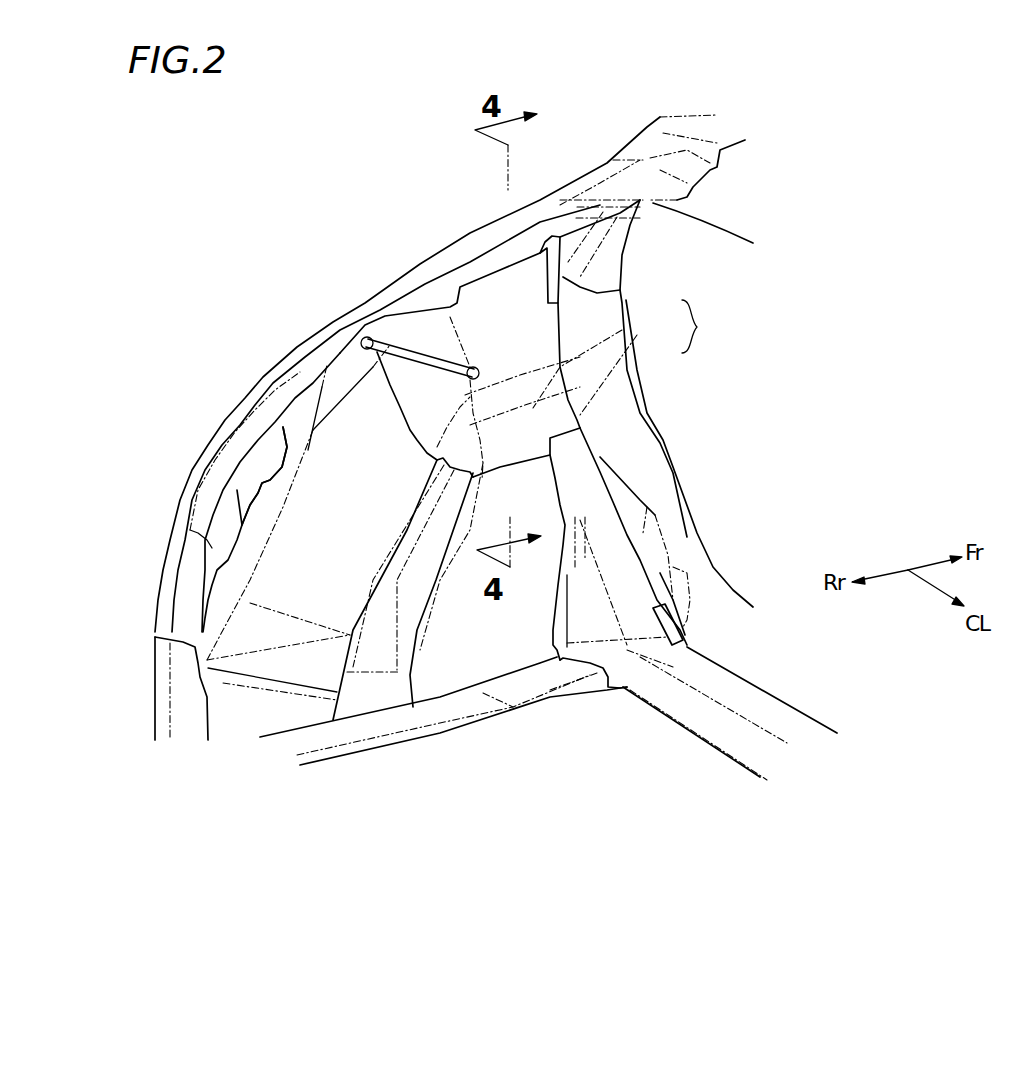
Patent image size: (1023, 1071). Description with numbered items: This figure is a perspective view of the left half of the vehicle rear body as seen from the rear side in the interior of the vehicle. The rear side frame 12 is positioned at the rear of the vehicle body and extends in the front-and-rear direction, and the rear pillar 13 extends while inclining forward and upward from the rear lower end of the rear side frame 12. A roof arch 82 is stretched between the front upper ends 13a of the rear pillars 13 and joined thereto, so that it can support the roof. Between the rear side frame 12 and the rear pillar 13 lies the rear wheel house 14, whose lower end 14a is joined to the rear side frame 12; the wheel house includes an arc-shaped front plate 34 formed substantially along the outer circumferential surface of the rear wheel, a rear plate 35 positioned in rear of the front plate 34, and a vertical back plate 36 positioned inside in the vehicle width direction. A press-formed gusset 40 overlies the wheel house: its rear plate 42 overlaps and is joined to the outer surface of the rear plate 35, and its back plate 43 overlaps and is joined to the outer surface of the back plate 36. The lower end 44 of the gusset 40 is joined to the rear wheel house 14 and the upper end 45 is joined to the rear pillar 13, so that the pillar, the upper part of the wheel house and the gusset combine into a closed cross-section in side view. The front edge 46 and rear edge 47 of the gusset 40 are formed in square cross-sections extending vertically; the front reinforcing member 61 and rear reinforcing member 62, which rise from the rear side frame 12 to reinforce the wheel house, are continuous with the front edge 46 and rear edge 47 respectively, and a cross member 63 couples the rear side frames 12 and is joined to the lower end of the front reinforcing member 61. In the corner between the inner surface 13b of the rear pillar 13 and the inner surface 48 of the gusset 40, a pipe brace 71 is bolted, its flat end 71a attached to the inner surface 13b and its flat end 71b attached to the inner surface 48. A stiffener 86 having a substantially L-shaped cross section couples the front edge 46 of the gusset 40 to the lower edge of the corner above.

The rear side frame 12 is at (370, 730).
The rear pillar 13 is at (277, 404).
The front upper end of rear pillar 13a is at (594, 181).
The inner surface of rear pillar 13b is at (327, 366).
The rear wheel house 14 is at (327, 483).
The lower end of rear wheel house 14a is at (468, 683).
The front plate of rear wheel house 34 is at (630, 433).
The rear plate of rear wheel house 35 is at (293, 512).
The back plate of rear wheel house 36 is at (540, 647).
The gusset 40 is at (706, 326).
The rear plate of gusset 42 is at (632, 325).
The back plate of gusset 43 is at (640, 353).
The lower end of gusset 44 is at (523, 450).
The upper end of gusset 45 is at (493, 280).
The front edge of gusset 46 is at (560, 320).
The rear edge of gusset 47 is at (470, 390).
The inner surface of gusset 48 is at (640, 388).
The front reinforcing member 61 is at (603, 510).
The rear reinforcing member 62 is at (397, 607).
The cross member 63 is at (767, 700).
The brace 71 is at (407, 340).
The end of brace 71a is at (370, 337).
The end of brace 71b is at (470, 368).
The roof arch 82 is at (713, 217).
The stiffener 86 is at (620, 287).